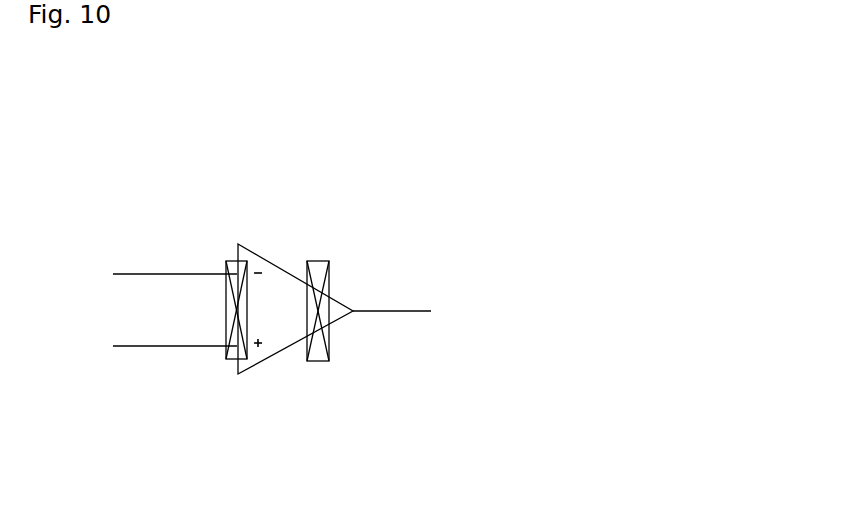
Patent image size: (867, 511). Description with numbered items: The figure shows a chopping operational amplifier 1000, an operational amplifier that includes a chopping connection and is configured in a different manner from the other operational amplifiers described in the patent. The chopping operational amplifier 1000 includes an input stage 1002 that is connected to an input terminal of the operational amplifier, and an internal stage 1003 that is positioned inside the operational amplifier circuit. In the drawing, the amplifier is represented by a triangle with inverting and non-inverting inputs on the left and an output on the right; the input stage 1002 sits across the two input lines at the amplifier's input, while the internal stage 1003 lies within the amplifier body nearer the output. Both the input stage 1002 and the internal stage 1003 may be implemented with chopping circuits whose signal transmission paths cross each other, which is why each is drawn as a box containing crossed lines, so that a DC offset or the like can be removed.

The chopping operational amplifier 1000 is at (448, 153).
The input stage 1002 is at (232, 260).
The internal stage 1003 is at (319, 260).